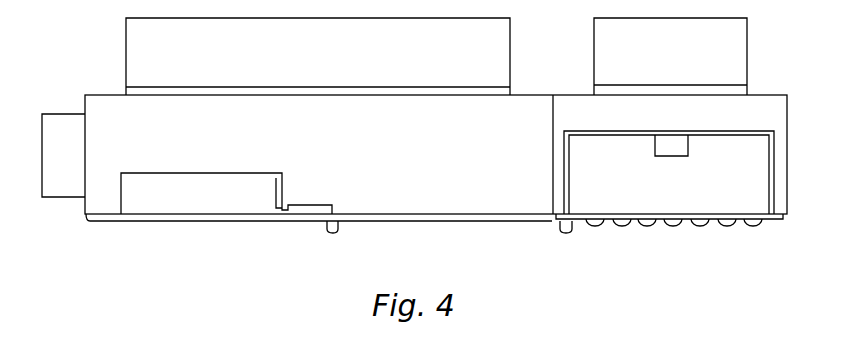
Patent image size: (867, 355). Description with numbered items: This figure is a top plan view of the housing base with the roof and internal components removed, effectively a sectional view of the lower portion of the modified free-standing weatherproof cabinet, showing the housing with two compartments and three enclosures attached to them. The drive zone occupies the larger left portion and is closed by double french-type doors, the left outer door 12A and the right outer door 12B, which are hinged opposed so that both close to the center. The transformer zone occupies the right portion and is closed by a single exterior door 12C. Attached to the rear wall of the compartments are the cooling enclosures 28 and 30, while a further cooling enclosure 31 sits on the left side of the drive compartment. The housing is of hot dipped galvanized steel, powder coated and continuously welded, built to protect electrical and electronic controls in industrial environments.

The left outer door 12A is at (198, 222).
The right outer door 12B is at (413, 222).
The exterior door 12C is at (668, 223).
The cooling enclosure 28 is at (325, 60).
The cooling enclosure 30 is at (678, 65).
The cooling enclosure 31 is at (72, 156).